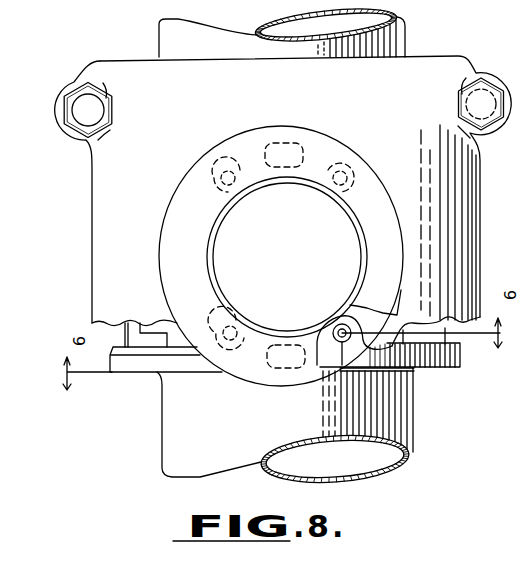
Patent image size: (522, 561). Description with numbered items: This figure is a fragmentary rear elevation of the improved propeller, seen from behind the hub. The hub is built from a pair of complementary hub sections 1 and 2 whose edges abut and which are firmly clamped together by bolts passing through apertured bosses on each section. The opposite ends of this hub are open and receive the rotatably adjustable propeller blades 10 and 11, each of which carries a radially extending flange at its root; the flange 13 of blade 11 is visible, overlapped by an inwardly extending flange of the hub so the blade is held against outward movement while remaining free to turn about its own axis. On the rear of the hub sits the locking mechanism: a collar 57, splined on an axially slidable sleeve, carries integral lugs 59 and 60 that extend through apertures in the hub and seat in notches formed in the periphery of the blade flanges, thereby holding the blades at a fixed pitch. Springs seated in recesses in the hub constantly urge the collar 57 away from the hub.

The hub section 1 is at (97, 208).
The hub section 2 is at (497, 84).
The propeller blade 10 is at (407, 38).
The propeller blade 11 is at (400, 426).
The radially extending flange 13 is at (460, 367).
The collar 57 is at (165, 254).
The lug 59 is at (272, 370).
The lug 60 is at (293, 147).